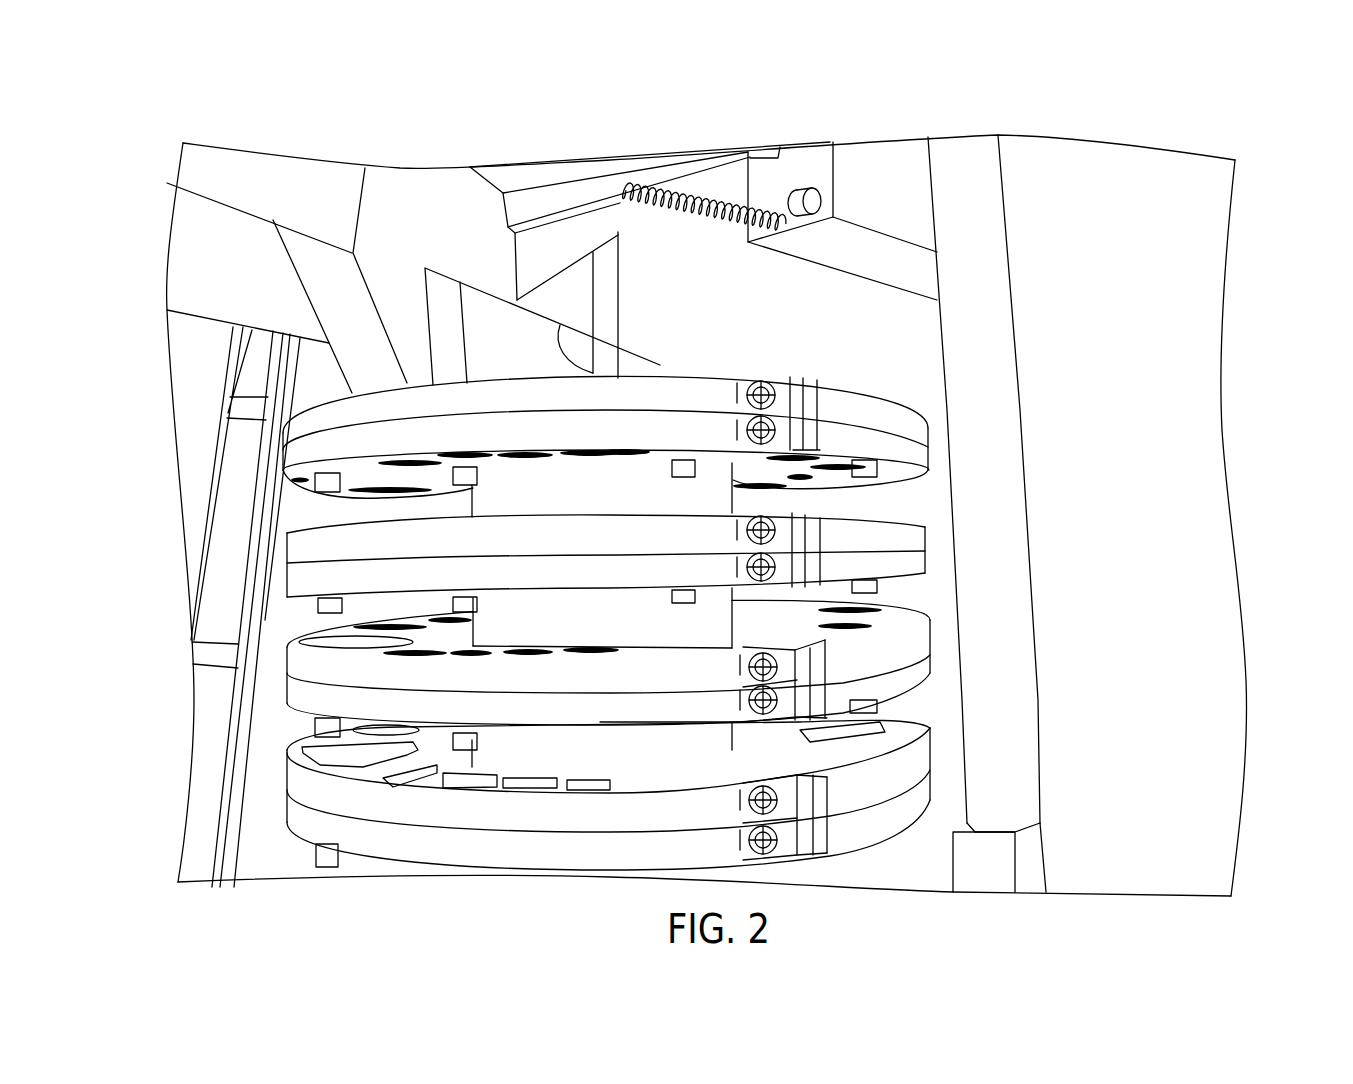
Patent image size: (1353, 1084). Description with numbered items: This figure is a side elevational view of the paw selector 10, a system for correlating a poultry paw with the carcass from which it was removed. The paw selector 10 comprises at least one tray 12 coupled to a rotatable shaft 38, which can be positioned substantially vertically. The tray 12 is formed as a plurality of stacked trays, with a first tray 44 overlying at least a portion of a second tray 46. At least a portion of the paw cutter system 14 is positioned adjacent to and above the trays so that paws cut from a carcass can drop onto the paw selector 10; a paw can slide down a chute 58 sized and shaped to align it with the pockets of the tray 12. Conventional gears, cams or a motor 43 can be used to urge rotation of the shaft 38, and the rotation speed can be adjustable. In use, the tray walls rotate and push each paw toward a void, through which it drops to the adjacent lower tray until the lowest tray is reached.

The paw selector 10 is at (1266, 201).
The tray 12 is at (310, 433).
The paw cutter system 14 is at (313, 277).
The rotatable shaft 38 is at (602, 280).
The motor 43 is at (808, 190).
The first tray 44 is at (330, 452).
The second tray 46 is at (328, 578).
The chute 58 is at (348, 320).